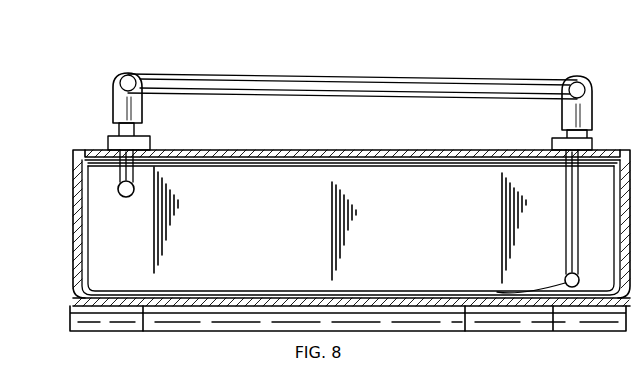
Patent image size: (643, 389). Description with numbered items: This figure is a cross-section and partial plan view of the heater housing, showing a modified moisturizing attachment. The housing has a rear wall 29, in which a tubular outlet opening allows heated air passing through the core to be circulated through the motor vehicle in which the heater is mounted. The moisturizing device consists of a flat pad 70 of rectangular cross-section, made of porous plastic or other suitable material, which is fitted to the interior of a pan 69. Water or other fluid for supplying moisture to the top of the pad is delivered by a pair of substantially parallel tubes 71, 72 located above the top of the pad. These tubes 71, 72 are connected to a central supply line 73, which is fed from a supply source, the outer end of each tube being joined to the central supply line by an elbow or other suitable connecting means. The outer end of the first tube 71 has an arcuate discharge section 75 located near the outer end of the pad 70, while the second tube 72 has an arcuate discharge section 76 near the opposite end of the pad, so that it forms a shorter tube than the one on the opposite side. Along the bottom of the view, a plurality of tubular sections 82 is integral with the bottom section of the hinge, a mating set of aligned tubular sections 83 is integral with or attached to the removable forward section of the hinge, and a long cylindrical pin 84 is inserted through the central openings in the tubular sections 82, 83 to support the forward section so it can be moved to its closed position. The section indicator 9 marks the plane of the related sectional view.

The section line 9- 9 is at (577, 72).
The rear wall 29 is at (470, 157).
The pan 69 is at (252, 153).
The flat pad 70 is at (343, 172).
The tube 71 is at (573, 172).
The second tube 72 is at (151, 150).
The central supply line 73 is at (352, 77).
The arcuate discharge section 75 is at (497, 292).
The arcuate discharge section 76 is at (113, 194).
The tubular sections 82 is at (108, 322).
The aligned tubular sections 83 is at (192, 322).
The long cylindrical pin 84 is at (479, 322).